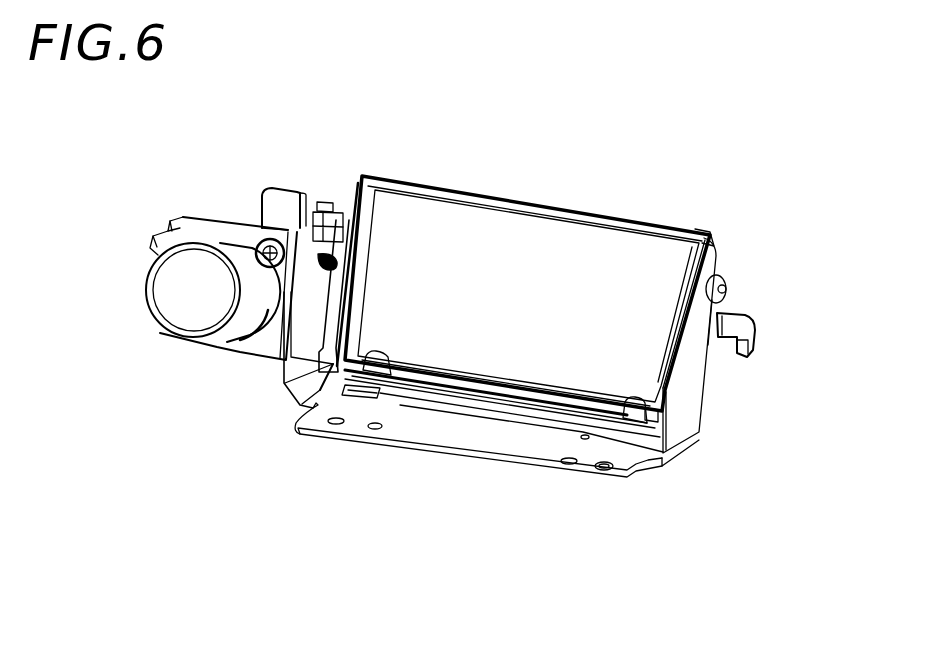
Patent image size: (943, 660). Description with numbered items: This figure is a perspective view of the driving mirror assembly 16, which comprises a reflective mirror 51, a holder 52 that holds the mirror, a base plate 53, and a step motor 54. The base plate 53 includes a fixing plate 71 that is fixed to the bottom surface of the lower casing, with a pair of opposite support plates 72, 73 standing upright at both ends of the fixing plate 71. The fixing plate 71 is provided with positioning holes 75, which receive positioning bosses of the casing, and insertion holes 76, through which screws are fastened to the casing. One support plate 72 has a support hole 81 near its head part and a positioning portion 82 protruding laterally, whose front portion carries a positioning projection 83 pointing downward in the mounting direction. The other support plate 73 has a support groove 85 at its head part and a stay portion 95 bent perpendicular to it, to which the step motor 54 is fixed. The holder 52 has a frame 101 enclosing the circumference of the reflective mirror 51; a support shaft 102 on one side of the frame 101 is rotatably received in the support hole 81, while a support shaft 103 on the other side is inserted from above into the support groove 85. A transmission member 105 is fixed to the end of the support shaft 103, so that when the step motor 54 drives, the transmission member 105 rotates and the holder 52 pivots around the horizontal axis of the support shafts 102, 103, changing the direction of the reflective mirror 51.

The driving mirror assembly 16 is at (618, 196).
The reflective mirror 51 is at (521, 258).
The holder 52 is at (673, 224).
The base plate 53 is at (664, 465).
The step motor 54 is at (167, 300).
The fixing plate 71 is at (471, 468).
The support plate 72 is at (690, 423).
The support plate 73 is at (280, 374).
The positioning holes 75 is at (336, 426).
The insertion holes 76 is at (376, 430).
The support hole 81 is at (716, 302).
The positioning portion 82 is at (746, 317).
The positioning projection 83 is at (758, 351).
The support groove 85 is at (297, 200).
The stay portion 95 is at (247, 354).
The frame 101 is at (699, 224).
The support shaft 102 is at (728, 283).
The support shaft 103 is at (334, 203).
The transmission member 105 is at (272, 189).